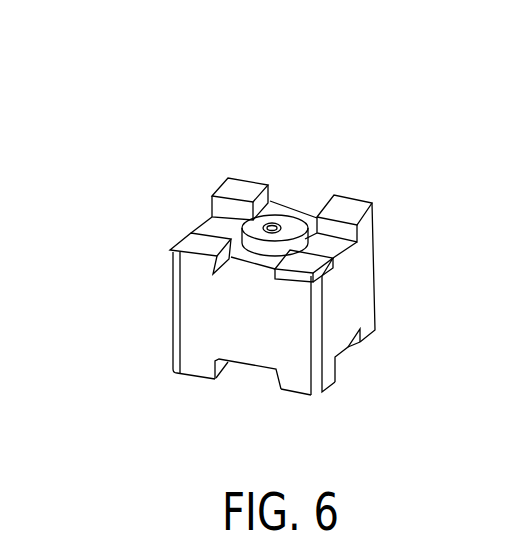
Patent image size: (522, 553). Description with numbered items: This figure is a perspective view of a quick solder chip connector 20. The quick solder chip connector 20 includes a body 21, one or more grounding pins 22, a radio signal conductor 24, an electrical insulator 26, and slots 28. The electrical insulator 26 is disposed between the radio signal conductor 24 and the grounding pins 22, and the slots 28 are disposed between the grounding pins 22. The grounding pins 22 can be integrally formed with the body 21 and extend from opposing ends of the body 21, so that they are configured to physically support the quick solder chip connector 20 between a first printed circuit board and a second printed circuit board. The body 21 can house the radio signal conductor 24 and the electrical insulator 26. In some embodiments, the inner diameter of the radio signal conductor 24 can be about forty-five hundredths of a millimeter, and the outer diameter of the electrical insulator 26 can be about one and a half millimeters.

The quick solder chip connector 20 is at (123, 101).
The body 21 is at (296, 379).
The grounding pins 22 is at (248, 192).
The radio signal conductor 24 is at (246, 230).
The electrical insulator 26 is at (260, 221).
The slots 28 is at (355, 248).